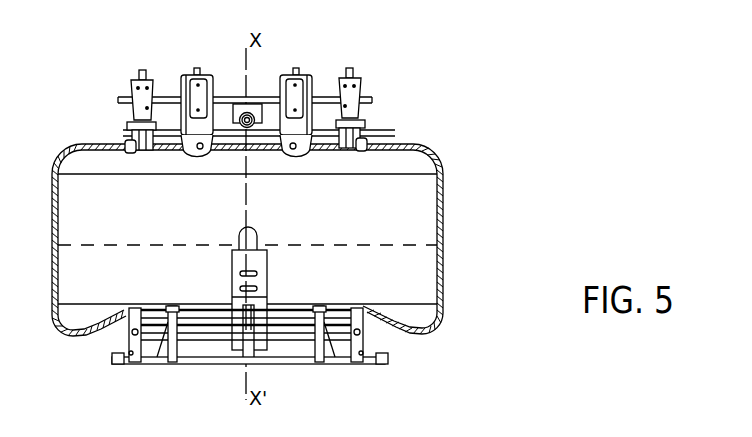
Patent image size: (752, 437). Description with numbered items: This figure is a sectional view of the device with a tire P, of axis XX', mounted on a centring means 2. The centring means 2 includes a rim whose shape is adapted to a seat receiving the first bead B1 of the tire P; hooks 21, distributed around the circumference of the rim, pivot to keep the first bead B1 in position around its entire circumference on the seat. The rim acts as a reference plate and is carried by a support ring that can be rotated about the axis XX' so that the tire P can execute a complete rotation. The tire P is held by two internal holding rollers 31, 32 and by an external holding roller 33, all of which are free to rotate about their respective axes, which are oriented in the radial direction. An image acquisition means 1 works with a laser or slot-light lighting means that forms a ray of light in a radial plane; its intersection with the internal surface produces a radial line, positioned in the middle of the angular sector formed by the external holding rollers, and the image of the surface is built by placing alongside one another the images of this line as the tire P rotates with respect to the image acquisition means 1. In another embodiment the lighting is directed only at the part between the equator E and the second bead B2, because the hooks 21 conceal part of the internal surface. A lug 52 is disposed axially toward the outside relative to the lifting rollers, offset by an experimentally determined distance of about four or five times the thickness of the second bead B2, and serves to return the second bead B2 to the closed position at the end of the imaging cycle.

The image acquisition means 1 is at (266, 258).
The centring means 2 is at (283, 334).
The hooks 21 is at (168, 306).
The internal holding roller 31 is at (193, 153).
The internal holding roller 32 is at (300, 153).
The external holding roller 33 is at (245, 116).
The lug 52 is at (129, 131).
The tire P is at (437, 152).
The equator E is at (413, 245).
The first bead B1 is at (122, 320).
The second bead B2 is at (130, 131).